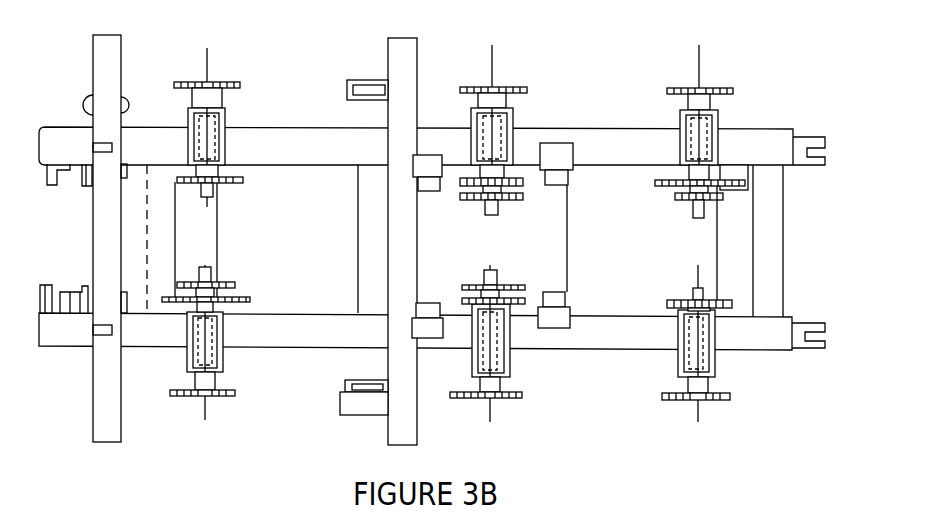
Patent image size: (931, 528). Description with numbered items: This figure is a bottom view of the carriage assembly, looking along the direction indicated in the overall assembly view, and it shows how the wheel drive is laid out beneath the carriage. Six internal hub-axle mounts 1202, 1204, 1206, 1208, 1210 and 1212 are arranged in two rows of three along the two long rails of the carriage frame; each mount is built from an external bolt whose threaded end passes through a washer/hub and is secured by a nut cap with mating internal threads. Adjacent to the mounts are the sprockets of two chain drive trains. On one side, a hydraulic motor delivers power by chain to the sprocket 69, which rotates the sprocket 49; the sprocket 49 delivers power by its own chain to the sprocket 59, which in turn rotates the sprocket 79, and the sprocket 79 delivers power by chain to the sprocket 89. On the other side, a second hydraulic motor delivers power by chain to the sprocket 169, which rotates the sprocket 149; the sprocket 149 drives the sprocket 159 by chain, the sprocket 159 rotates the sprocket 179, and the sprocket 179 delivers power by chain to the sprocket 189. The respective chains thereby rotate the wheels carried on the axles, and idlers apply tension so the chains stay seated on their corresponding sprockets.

The internal hub-axle mount 1202 is at (720, 88).
The internal hub-axle mount 1204 is at (505, 87).
The internal hub-axle mount 1206 is at (238, 87).
The internal hub-axle mount 1208 is at (700, 386).
The internal hub-axle mount 1210 is at (497, 385).
The internal hub-axle mount 1212 is at (208, 380).
The sprocket 49 is at (721, 200).
The sprocket 59 is at (518, 200).
The sprocket 69 is at (733, 186).
The sprocket 79 is at (523, 183).
The sprocket 89 is at (233, 183).
The sprocket 149 is at (235, 285).
The sprocket 159 is at (478, 286).
The sprocket 169 is at (252, 300).
The sprocket 179 is at (500, 298).
The sprocket 189 is at (730, 302).